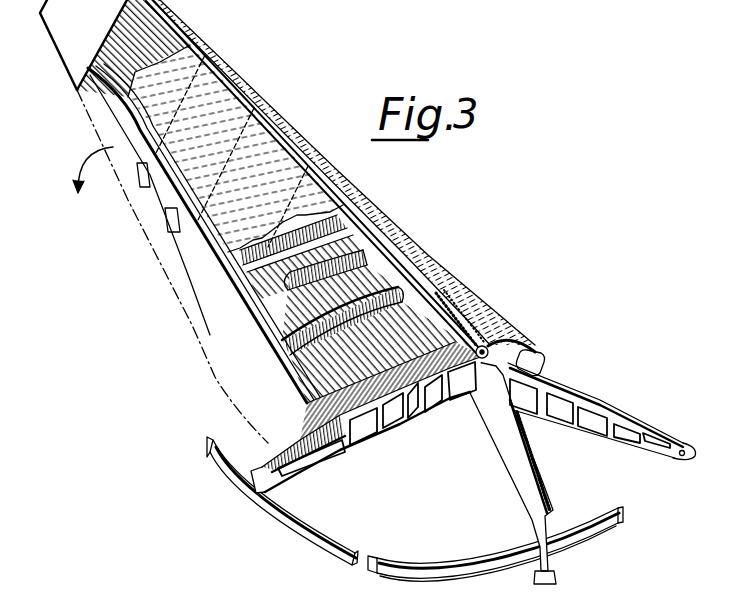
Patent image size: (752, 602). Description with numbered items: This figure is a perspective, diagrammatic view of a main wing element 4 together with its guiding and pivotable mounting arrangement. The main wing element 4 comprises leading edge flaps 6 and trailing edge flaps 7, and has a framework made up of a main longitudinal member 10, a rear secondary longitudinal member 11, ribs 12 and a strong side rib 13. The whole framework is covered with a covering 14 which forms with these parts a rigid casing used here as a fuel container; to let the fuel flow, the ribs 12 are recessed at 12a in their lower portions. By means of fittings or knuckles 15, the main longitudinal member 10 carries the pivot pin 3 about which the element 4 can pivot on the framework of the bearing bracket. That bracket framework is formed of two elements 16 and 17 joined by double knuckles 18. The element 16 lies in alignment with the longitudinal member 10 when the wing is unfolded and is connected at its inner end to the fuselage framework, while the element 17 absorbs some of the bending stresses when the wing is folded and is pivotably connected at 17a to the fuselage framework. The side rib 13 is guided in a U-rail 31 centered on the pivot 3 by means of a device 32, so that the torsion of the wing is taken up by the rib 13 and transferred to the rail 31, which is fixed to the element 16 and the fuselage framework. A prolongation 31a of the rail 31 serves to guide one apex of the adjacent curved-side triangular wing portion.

The pivot pin 3 is at (497, 347).
The main wing element 4 is at (197, 192).
The leading edge flaps 6 is at (443, 277).
The trailing edge flaps 7 is at (178, 267).
The main longitudinal member 10 is at (379, 252).
The rear secondary longitudinal member 11 is at (330, 240).
The ribs 12 is at (342, 240).
The recess 12a is at (286, 286).
The side rib 13 is at (397, 418).
The covering 14 is at (140, 60).
The fittings or knuckles 15 is at (455, 330).
The element of bearing bracket framework 16 is at (512, 463).
The element of bearing bracket framework 17 is at (603, 398).
The pivotable connection 17a is at (684, 459).
The double knuckles 18 is at (545, 355).
The U-rail 31 is at (433, 565).
The prolongation of the rail 31a is at (583, 545).
The guiding device 32 is at (237, 490).